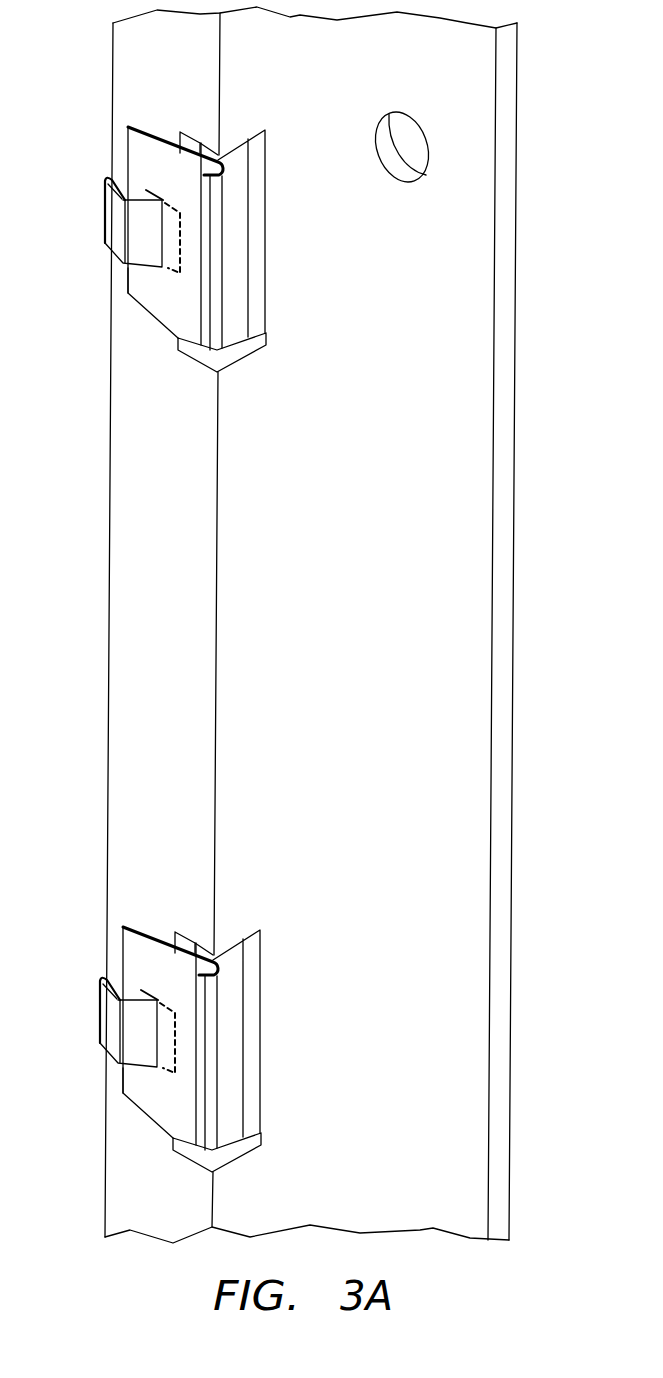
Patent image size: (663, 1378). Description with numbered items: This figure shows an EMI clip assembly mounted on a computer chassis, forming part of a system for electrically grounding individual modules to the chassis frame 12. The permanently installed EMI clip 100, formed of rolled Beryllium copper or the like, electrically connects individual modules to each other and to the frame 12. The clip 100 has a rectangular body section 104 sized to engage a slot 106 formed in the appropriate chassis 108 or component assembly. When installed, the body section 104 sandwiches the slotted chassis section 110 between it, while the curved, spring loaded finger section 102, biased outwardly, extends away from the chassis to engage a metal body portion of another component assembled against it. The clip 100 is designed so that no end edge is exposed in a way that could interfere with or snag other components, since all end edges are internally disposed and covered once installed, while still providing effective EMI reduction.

The chassis frame 12 is at (505, 525).
The EMI clip 100 is at (160, 290).
The spring loaded finger section 102 is at (107, 218).
The rectangular body section 104 is at (228, 321).
The slot 106 is at (272, 148).
The chassis 108 is at (118, 653).
The slotted chassis section 110 is at (125, 282).